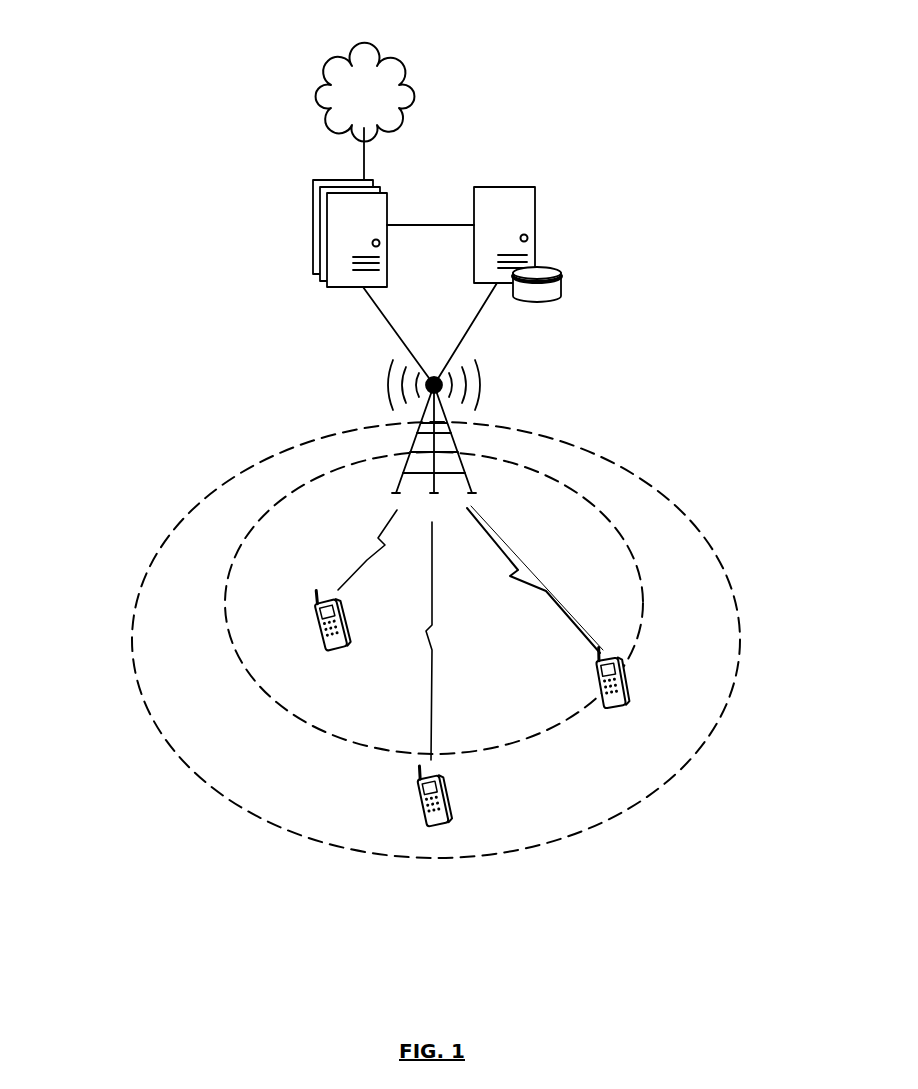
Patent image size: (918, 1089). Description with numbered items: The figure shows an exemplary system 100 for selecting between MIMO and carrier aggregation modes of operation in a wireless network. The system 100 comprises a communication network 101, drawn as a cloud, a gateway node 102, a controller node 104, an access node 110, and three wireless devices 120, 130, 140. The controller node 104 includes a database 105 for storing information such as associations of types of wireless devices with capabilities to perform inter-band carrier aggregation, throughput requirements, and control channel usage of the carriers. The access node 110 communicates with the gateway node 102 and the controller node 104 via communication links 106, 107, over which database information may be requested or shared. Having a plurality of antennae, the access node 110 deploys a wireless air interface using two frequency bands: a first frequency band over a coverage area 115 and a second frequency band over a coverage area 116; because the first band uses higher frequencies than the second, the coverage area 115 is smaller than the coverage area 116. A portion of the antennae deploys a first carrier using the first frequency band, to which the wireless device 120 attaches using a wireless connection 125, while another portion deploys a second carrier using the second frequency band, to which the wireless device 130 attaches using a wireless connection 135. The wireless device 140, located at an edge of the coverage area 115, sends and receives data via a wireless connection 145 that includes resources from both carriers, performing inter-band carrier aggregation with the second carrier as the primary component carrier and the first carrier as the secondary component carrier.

The system 100 is at (548, 51).
The communication network 101 is at (382, 107).
The gateway node 102 is at (332, 182).
The controller node 104 is at (535, 187).
The database 105 is at (562, 268).
The communication link 106 is at (472, 321).
The communication link 107 is at (378, 313).
The access node 110 is at (413, 460).
The coverage area 115 is at (232, 562).
The coverage area 116 is at (140, 602).
The wireless device 120 is at (323, 643).
The wireless connection 125 is at (361, 553).
The wireless device 130 is at (418, 818).
The wireless connection 135 is at (427, 697).
The wireless device 140 is at (623, 707).
The wireless connection 145 is at (523, 560).